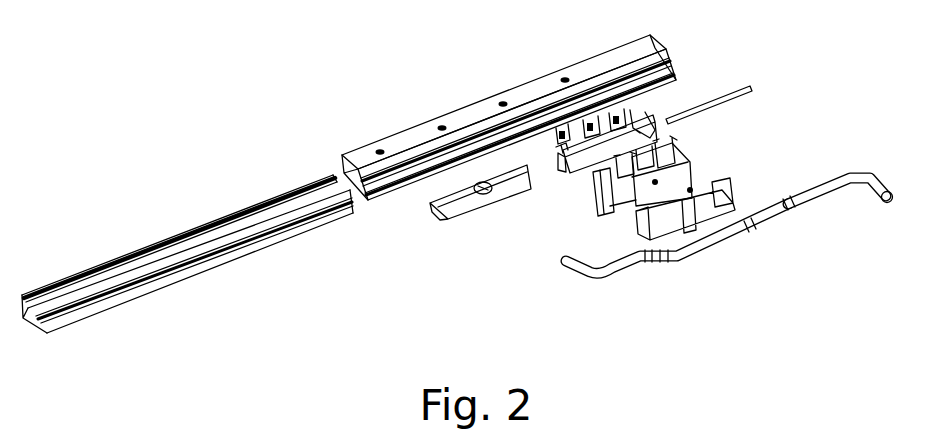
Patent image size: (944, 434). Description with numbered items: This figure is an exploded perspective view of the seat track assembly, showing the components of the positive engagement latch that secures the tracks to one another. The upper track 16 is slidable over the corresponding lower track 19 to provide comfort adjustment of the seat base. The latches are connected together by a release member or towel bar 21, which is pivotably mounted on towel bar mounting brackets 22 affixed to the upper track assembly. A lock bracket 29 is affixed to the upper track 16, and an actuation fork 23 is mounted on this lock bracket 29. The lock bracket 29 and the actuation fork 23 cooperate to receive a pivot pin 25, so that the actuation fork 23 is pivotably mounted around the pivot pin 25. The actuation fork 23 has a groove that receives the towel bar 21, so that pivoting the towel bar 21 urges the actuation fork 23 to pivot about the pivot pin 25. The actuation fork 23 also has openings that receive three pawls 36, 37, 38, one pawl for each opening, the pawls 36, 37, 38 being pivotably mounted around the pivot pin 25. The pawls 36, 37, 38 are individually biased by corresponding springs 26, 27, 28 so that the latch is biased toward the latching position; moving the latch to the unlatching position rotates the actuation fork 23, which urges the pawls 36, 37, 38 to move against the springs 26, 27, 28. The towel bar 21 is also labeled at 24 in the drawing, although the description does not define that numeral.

The upper track 16 is at (370, 150).
The lower track 19 is at (218, 218).
The towel bar 21 is at (828, 179).
The towel bar mounting bracket 22 is at (460, 219).
The actuation fork 23 is at (722, 212).
The flexible hose 24 is at (752, 214).
The pivot pin 25 is at (730, 85).
The spring 26 is at (617, 103).
The spring 27 is at (598, 92).
The spring 28 is at (572, 138).
The lock bracket 29 is at (556, 163).
The pawl 36 is at (647, 188).
The pawl 37 is at (676, 178).
The pawl 38 is at (612, 207).